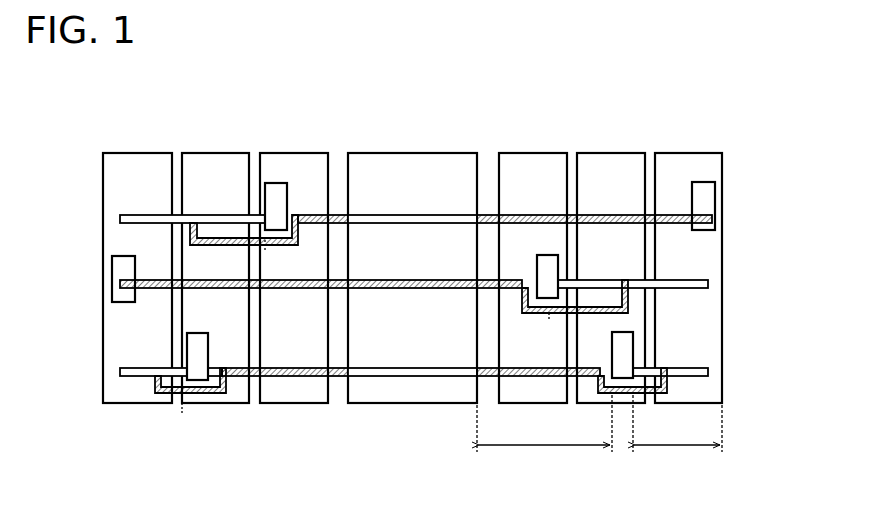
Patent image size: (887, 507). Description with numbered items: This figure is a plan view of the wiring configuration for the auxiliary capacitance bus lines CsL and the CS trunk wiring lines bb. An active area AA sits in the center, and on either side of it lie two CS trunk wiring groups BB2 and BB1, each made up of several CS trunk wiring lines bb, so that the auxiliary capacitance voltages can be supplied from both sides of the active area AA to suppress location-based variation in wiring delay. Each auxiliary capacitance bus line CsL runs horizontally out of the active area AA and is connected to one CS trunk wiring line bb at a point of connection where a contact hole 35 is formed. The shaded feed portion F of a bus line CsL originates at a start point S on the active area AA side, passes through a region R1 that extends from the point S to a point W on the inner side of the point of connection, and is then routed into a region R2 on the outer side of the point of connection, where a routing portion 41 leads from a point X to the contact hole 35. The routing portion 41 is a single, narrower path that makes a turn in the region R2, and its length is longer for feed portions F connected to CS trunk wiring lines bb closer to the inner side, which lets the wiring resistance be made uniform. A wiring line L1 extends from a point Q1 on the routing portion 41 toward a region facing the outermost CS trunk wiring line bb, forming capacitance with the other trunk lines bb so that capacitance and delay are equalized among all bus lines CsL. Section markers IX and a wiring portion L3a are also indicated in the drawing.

The CS trunk wiring group BB2 is at (222, 104).
The CS trunk wiring group BB1 is at (620, 104).
The CS trunk wiring line bb is at (125, 155).
The active area AA is at (398, 155).
The wiring line (first wiring line) L1 is at (118, 219).
The routing portion 41 is at (236, 246).
The contact hole 35 is at (285, 193).
The point on the routing portion Q1 is at (200, 214).
The point of access to the region R2 X is at (449, 346).
The section line IX is at (189, 414).
The point W is at (608, 403).
The feed portion F is at (338, 213).
The auxiliary capacitance bus line CsL is at (402, 214).
The start point S is at (475, 378).
The third wiring line portion L3a is at (514, 368).
The region R1 is at (543, 425).
The region R2 is at (678, 437).